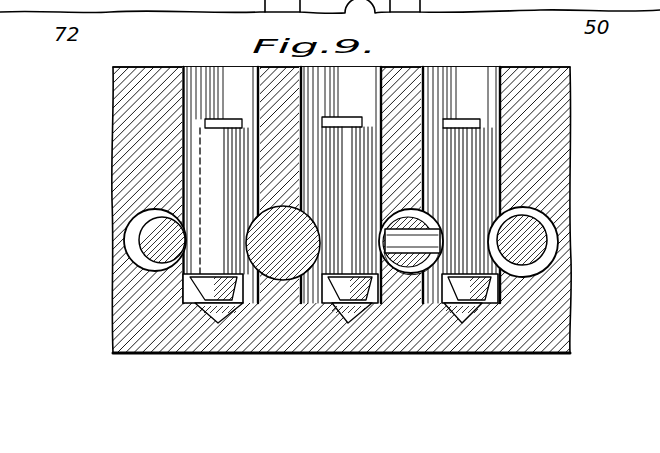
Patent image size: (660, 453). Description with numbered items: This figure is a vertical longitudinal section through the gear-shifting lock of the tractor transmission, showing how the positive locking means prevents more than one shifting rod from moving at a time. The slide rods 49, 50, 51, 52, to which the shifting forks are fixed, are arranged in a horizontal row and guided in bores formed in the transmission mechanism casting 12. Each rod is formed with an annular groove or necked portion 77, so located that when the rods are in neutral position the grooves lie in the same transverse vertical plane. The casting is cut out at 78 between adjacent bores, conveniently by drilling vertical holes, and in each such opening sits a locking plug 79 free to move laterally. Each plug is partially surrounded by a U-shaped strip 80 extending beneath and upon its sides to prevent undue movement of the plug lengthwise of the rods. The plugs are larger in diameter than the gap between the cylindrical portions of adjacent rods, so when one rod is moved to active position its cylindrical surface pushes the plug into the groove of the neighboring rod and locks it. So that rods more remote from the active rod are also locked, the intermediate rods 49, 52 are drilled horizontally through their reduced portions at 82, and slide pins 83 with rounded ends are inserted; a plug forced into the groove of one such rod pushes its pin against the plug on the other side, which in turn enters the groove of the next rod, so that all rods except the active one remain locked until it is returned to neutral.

The transmission mechanism casting 12 is at (572, 203).
The slide rod 49 is at (432, 203).
The slide rod 50 is at (543, 233).
The slide rod 51 is at (131, 232).
The slide rod 52 is at (265, 215).
The annular groove 77 is at (141, 248).
The cut-out opening 78 is at (341, 50).
The locking plug 79 is at (197, 148).
The U-shaped strip 80 is at (203, 316).
The horizontal bore 82 is at (437, 226).
The slide pin 83 is at (442, 243).